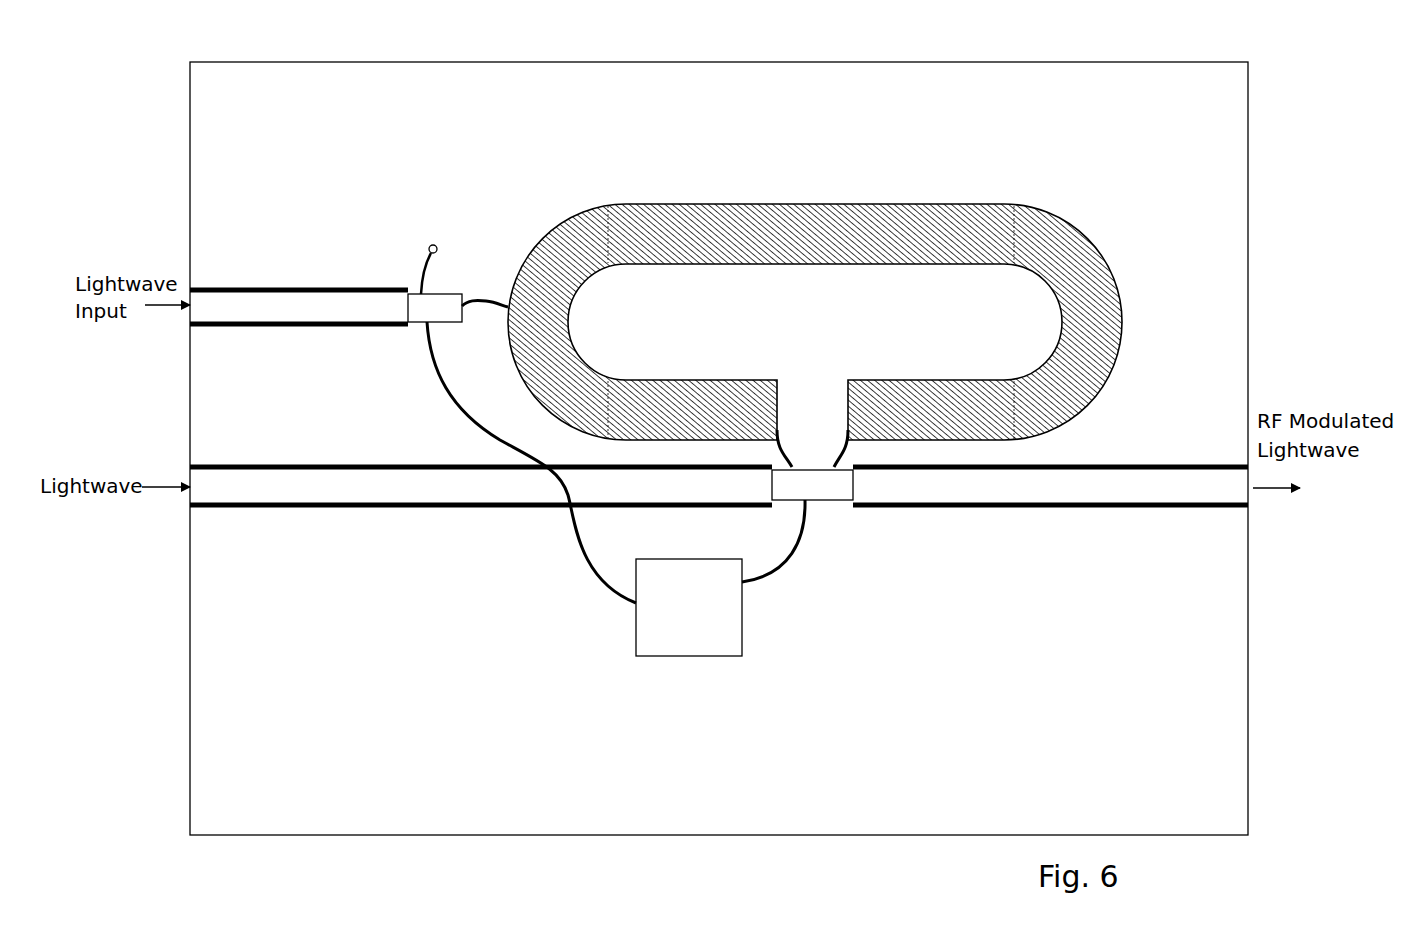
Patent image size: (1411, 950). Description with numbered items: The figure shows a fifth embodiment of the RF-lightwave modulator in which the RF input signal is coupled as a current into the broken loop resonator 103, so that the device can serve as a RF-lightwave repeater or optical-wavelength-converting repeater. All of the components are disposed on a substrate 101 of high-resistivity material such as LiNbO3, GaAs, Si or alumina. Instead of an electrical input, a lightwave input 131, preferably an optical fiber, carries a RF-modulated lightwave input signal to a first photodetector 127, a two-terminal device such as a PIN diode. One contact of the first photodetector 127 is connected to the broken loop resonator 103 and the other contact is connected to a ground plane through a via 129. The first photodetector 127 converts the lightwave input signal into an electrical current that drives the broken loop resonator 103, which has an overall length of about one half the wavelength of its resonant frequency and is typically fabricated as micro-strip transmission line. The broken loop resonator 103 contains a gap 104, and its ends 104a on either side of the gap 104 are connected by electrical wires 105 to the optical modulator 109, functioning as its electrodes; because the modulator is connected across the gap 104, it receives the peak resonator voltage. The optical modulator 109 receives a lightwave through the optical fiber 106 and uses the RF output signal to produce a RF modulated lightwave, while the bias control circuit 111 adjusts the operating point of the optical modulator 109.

The substrate 101 is at (878, 62).
The broken loop resonator 103 is at (785, 203).
The gap 104 is at (810, 400).
The ends of the broken loop resonator 104a is at (778, 398).
The electrical wires 105 is at (825, 447).
The optical fiber 106 is at (270, 463).
The optical modulator 109 is at (828, 503).
The bias control circuit 111 is at (742, 625).
The first photodetector 127 is at (450, 292).
The via 129 is at (437, 246).
The lightwave input 131 is at (277, 288).